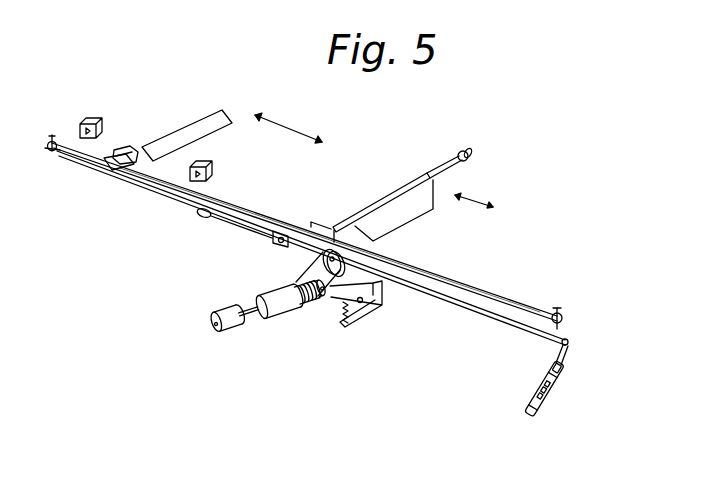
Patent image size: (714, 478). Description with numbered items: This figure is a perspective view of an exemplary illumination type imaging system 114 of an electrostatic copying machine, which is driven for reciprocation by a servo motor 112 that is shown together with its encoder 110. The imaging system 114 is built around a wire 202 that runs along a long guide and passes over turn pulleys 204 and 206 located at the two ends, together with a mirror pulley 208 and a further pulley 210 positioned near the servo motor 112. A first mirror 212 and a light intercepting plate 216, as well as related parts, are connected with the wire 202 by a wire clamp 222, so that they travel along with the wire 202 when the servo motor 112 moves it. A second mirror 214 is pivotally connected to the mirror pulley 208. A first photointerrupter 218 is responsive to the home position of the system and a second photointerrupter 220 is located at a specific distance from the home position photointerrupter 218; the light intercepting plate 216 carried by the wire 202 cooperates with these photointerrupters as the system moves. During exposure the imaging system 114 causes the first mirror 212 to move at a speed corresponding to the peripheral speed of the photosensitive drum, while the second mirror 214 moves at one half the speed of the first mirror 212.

The encoder 110 is at (208, 322).
The servo motor 112 is at (262, 290).
The illumination type imaging system 114 is at (385, 143).
The wire 202 is at (493, 319).
The turn pulley 204 is at (560, 312).
The turn pulley 206 is at (49, 152).
The mirror pulley 208 is at (273, 245).
The pulley 210 is at (312, 272).
The first mirror 212 is at (222, 124).
The second mirror 214 is at (419, 212).
The light intercepting plate 216 is at (128, 146).
The first photointerrupter 218 is at (89, 120).
The second photointerrupter 220 is at (211, 170).
The wire clamp 222 is at (110, 172).